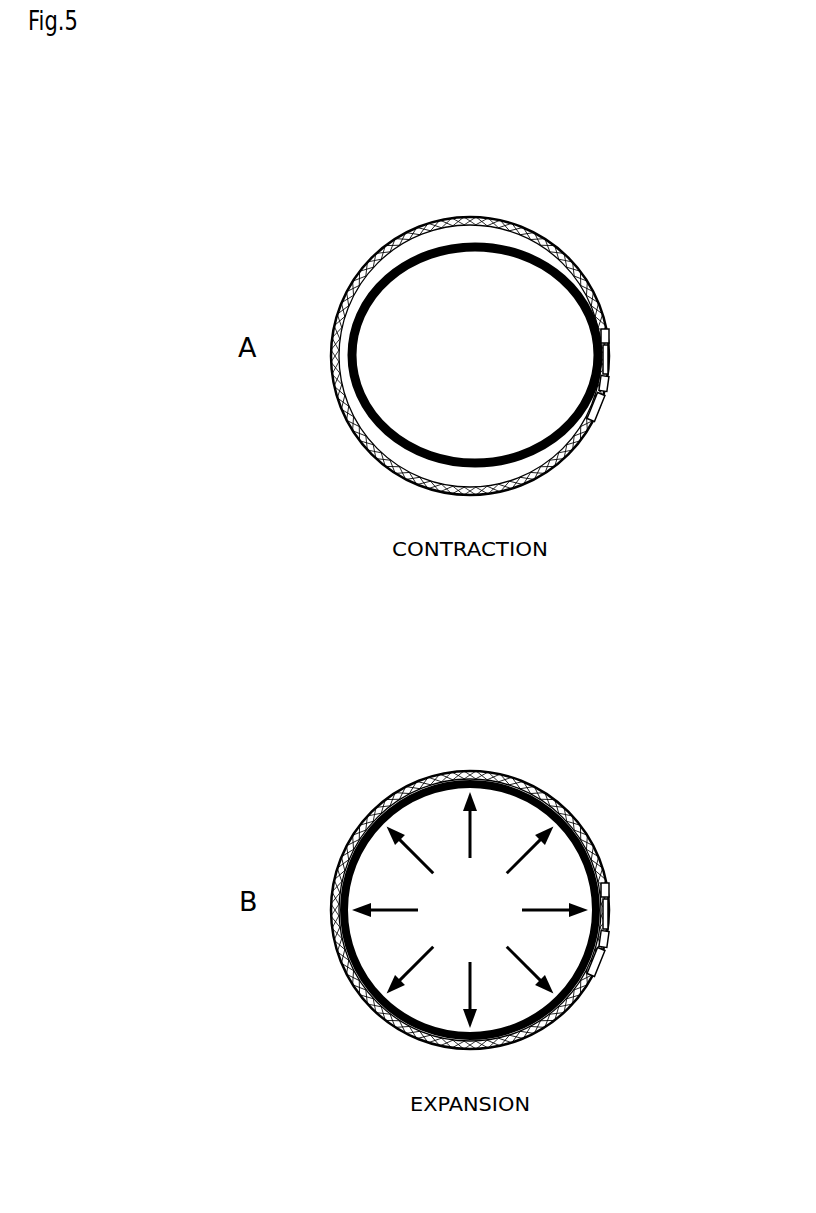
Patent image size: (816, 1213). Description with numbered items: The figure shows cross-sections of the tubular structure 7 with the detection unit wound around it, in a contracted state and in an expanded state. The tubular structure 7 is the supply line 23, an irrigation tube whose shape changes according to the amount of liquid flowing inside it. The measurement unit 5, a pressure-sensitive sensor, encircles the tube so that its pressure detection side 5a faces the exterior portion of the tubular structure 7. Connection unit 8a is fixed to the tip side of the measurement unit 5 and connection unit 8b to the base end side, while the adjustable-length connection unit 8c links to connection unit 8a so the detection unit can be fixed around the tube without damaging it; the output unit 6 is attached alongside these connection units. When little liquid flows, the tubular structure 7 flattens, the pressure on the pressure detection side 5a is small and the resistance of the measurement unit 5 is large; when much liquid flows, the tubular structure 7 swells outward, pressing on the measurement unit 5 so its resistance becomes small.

In FIG. 5A, the measurement unit 5 is at (473, 215).
In FIG. 5B, the measurement unit 5 is at (472, 771).
In FIG. 5A, the pressure detection side 5a is at (530, 244).
In FIG. 5A, the tubular structure 7 is at (410, 258).
In FIG. 5B, the tubular structure 7 is at (402, 791).
In FIG. 5A, the supply line 23 is at (471, 327).
In FIG. 5B, the supply line 23 is at (469, 886).
In FIG. 5A, the connection unit 8a is at (611, 337).
In FIG. 5B, the connection unit 8a is at (611, 890).
In FIG. 5A, the connection unit 8b is at (610, 382).
In FIG. 5B, the connection unit 8b is at (610, 936).
In FIG. 5A, the connection unit 8c is at (612, 358).
In FIG. 5B, the connection unit 8c is at (612, 912).
In FIG. 5A, the output unit 6 is at (606, 412).
In FIG. 5B, the output unit 6 is at (606, 966).